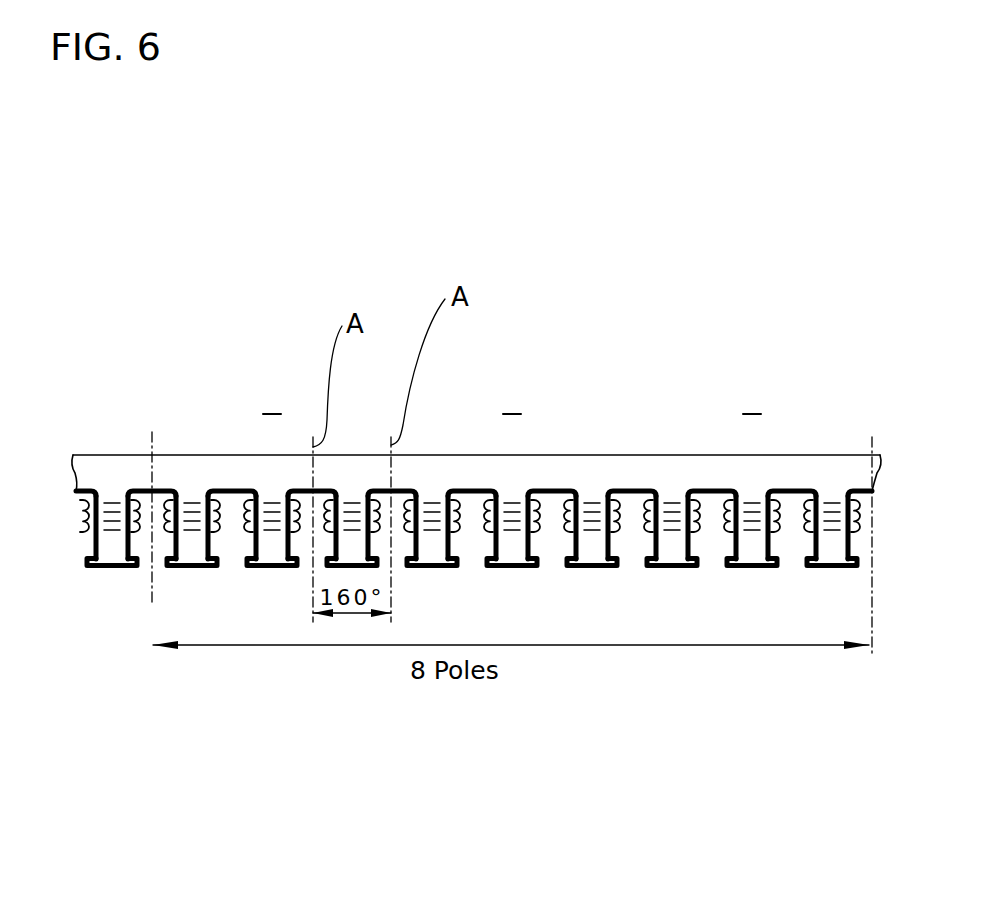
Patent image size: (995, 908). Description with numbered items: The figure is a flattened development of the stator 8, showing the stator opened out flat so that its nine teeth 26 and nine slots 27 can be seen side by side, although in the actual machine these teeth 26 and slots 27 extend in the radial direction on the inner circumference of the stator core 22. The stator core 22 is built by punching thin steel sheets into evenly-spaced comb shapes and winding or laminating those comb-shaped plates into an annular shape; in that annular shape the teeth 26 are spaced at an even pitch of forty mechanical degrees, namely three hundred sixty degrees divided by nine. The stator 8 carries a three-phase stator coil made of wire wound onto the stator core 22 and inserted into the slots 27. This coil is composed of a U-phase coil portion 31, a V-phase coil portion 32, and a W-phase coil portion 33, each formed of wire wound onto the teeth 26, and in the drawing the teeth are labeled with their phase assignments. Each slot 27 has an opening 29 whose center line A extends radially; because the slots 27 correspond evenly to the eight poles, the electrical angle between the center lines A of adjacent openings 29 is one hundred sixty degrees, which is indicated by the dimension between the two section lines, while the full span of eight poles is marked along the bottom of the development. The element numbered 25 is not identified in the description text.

The stator 8 is at (558, 420).
The stator core 22 is at (617, 467).
The coil 25 is at (228, 530).
The teeth 26 is at (256, 568).
The slots 27 is at (463, 550).
The openings 29 is at (303, 563).
The U-phase coil portion 31 is at (808, 497).
The V-phase coil portion 32 is at (458, 503).
The W-phase coil portion 33 is at (170, 497).